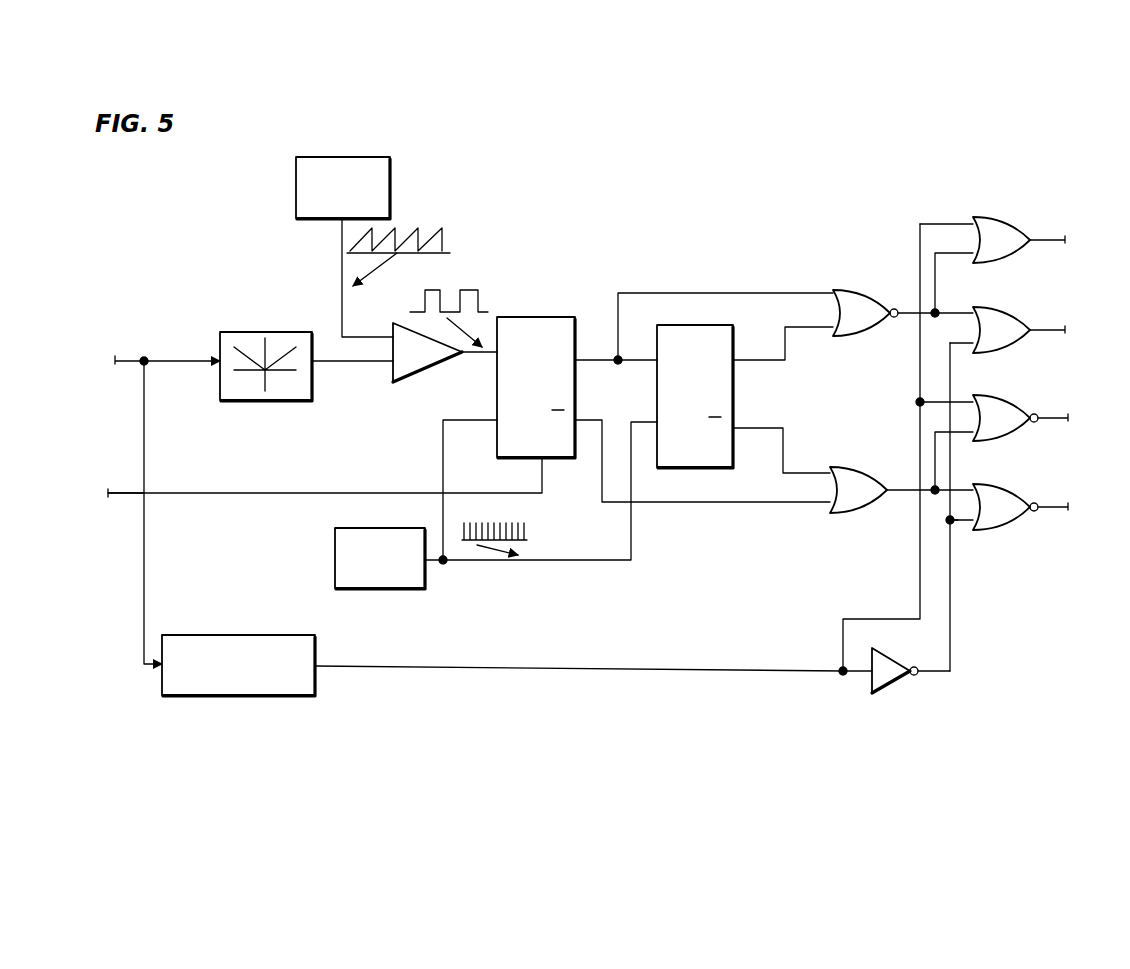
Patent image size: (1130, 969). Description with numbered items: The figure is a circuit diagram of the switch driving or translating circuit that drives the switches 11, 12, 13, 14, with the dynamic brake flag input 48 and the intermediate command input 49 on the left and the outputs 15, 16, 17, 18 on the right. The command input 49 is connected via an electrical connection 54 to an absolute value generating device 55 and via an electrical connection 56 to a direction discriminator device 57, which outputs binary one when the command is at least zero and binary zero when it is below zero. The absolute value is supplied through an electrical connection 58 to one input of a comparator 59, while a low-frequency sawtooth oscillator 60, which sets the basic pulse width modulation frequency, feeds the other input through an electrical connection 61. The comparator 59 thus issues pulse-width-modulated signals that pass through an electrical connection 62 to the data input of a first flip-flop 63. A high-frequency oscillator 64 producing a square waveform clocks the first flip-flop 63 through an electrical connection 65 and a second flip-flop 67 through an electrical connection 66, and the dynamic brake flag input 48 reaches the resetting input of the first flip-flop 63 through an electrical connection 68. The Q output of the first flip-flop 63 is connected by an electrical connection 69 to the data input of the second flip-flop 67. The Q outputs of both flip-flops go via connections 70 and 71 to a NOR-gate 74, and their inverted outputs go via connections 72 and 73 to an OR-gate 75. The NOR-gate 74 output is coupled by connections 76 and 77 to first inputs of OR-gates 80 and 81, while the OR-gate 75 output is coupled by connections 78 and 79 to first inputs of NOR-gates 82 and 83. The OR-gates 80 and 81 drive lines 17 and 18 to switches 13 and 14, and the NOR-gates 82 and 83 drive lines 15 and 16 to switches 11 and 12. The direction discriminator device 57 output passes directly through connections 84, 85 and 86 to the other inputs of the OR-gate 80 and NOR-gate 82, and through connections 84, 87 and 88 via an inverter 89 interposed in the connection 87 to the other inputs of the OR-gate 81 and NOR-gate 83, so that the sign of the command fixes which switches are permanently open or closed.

The switch 11 is at (1096, 419).
The switch 12 is at (1096, 508).
The switch 13 is at (1092, 241).
The switch 14 is at (1094, 331).
The output line 15 is at (1043, 421).
The output line 16 is at (1043, 510).
The output line 17 is at (1040, 243).
The output line 18 is at (1045, 333).
The dynamic brake flag input 48 is at (122, 493).
The intermediate command input 49 is at (118, 362).
The electrical connection 54 is at (198, 364).
The absolute value generating device 55 is at (283, 331).
The electrical connection 56 is at (146, 429).
The direction discriminator device 57 is at (285, 635).
The electrical connection 58 is at (330, 362).
The comparator 59 is at (428, 368).
The low-frequency oscillator 60 is at (335, 157).
The electrical connection 61 is at (341, 273).
The electrical connection 62 is at (470, 356).
The first flip-flop 63 is at (520, 316).
The high-frequency oscillator 64 is at (368, 528).
The electrical connection 65 is at (442, 437).
The electrical connection 66 is at (487, 562).
The second flip-flop 67 is at (682, 325).
The electrical connection 68 is at (492, 494).
The electrical connection 69 is at (632, 363).
The electric connection 70 is at (675, 294).
The electric connection 71 is at (745, 361).
The electric connection 72 is at (601, 479).
The electric connection 73 is at (750, 428).
The NOR-gate 74 is at (843, 296).
The OR-gate 75 is at (848, 474).
The electric connection 76 is at (937, 316).
The electric connection 77 is at (936, 276).
The electric connection 78 is at (937, 494).
The electric connection 79 is at (958, 432).
The OR-gate 80 is at (990, 220).
The OR-gate 81 is at (993, 312).
The NOR-gate 82 is at (995, 400).
The NOR-gate 83 is at (995, 488).
The electrical connection 84 is at (594, 670).
The electrical connection 85 is at (914, 402).
The electrical connection 86 is at (941, 402).
The electrical connection 87 is at (945, 520).
The electrical connection 88 is at (960, 522).
The inverter 89 is at (893, 660).